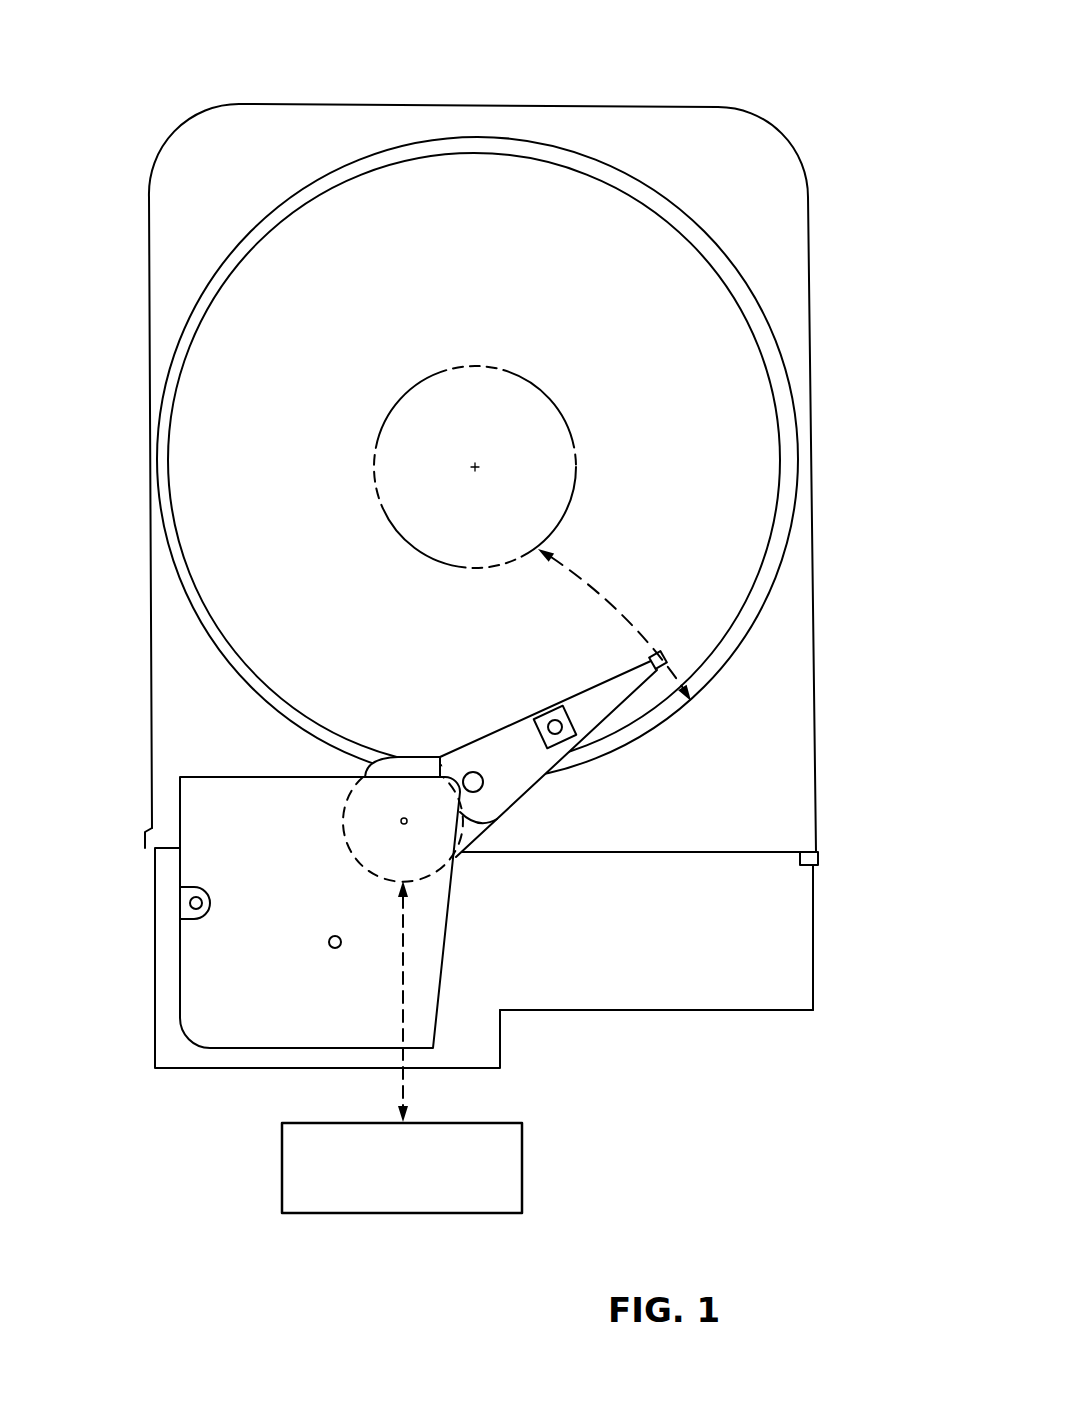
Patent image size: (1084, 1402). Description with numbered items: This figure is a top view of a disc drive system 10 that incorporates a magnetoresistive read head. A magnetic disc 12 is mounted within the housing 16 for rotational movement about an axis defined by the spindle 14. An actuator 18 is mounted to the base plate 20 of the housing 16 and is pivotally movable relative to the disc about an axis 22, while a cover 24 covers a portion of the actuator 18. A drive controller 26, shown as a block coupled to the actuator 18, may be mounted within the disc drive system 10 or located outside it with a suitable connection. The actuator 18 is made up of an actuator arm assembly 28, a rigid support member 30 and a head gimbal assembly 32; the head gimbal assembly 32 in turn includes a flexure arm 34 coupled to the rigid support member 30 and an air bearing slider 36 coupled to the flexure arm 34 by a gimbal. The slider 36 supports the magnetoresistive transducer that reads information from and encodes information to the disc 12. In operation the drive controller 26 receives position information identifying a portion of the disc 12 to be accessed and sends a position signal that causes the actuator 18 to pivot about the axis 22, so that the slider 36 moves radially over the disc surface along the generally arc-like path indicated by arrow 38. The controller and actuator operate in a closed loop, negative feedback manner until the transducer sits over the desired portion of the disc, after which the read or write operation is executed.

The disc drive system 10 is at (306, 84).
The magnetic disc 12 is at (448, 262).
The spindle 14 is at (442, 525).
The housing 16 is at (812, 284).
The actuator 18 is at (489, 887).
The base plate 20 is at (650, 1012).
The axis 22 is at (402, 818).
The cover 24 is at (203, 869).
The drive controller 26 is at (523, 1133).
The actuator arm assembly 28 is at (410, 742).
The rigid support member 30 is at (487, 799).
The head gimbal assembly 32 is at (614, 663).
The flexure arm 34 is at (567, 700).
The air bearing slider 36 is at (665, 652).
The arrow 38 is at (589, 577).